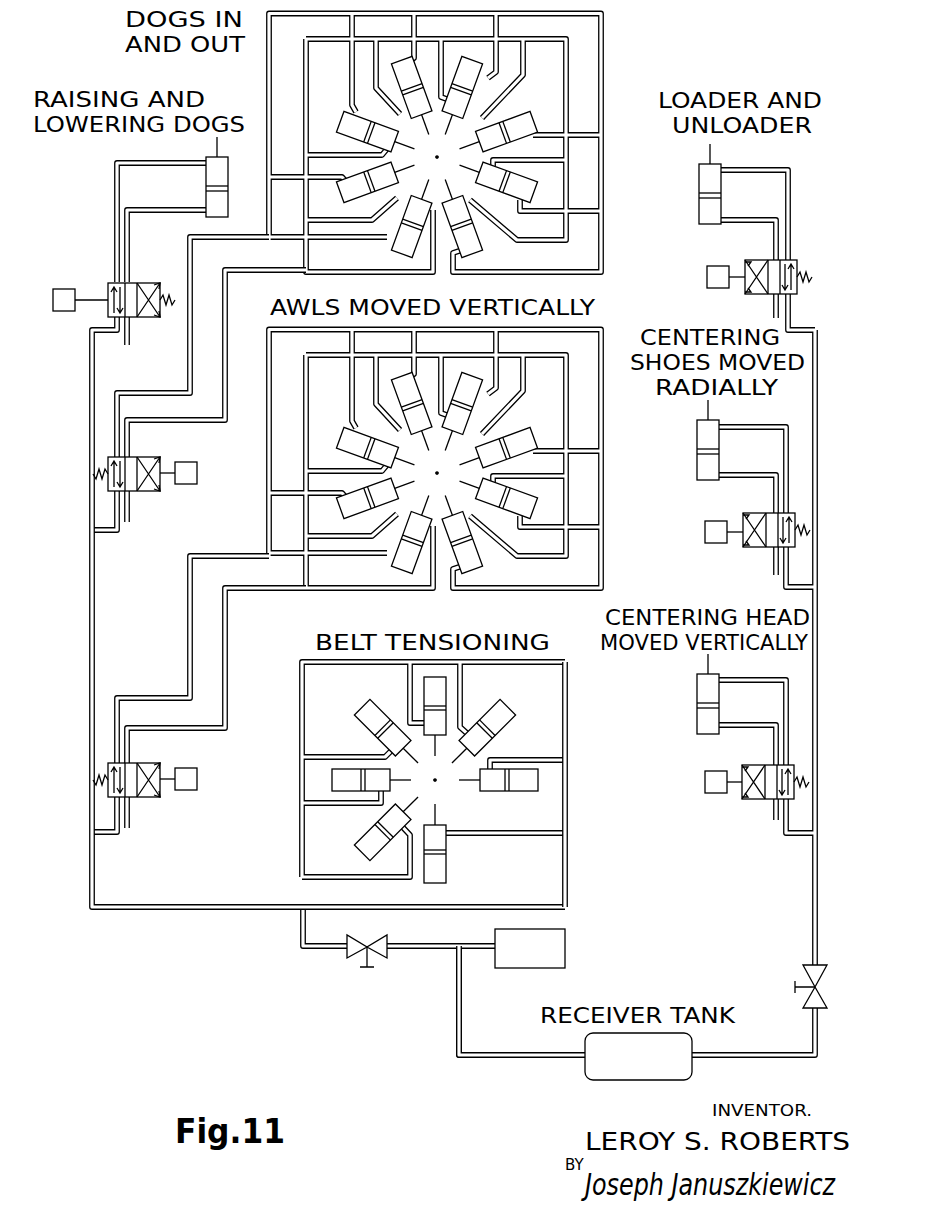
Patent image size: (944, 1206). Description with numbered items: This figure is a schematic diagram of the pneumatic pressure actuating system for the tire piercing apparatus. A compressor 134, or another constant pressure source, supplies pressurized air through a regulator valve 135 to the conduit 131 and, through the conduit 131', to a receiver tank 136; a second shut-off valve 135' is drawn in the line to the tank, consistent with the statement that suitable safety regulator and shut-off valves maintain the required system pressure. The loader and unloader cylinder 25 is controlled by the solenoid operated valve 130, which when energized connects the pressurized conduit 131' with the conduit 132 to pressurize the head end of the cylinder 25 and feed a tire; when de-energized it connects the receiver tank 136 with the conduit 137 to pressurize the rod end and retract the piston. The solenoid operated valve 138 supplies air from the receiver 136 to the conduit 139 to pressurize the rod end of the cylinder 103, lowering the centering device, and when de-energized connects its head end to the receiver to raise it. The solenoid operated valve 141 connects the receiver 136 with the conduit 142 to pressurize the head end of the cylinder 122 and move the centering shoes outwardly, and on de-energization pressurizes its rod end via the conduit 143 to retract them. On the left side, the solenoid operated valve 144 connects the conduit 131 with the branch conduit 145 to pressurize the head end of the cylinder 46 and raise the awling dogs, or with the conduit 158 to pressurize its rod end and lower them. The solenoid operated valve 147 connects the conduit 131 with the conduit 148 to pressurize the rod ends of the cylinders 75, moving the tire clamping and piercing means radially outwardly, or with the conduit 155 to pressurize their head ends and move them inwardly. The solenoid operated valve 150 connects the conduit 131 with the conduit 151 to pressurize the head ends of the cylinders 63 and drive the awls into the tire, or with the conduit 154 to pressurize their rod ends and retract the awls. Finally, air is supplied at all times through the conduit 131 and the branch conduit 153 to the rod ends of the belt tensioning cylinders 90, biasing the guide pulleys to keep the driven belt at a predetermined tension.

The pneumatic cylinder 25 is at (699, 212).
The pneumatic cylinder 46 is at (227, 197).
The pneumatic cylinders 63 is at (345, 429).
The pneumatic cylinders 75 is at (345, 113).
The pneumatic cylinders 90 is at (378, 705).
The pneumatic cylinder 103 is at (697, 715).
The pneumatic cylinder 122 is at (697, 465).
The solenoid operated valve 130 is at (720, 288).
The conduit 131 is at (328, 635).
The conduit 131' is at (475, 1007).
The conduit 132 is at (768, 222).
The compressor 134 is at (565, 948).
The regulator valve 135 is at (321, 967).
The shutoff valve 135' is at (766, 979).
The receiver tank 136 is at (618, 1075).
The conduit 137 is at (740, 168).
The solenoid operated valve 138 is at (716, 794).
The conduit 139 is at (740, 680).
The solenoid operated valve 141 is at (716, 544).
The conduit 142 is at (768, 478).
The conduit 143 is at (740, 426).
The solenoid operated valve 144 is at (82, 268).
The branch conduit 145 is at (200, 212).
The solenoid operated valve 147 is at (187, 485).
The conduit 148 is at (200, 422).
The solenoid operated valve 150 is at (187, 790).
The conduit 151 is at (187, 662).
The branch conduit 153 is at (570, 877).
The conduit 154 is at (228, 662).
The conduit 155 is at (185, 393).
The conduit 158 is at (117, 162).